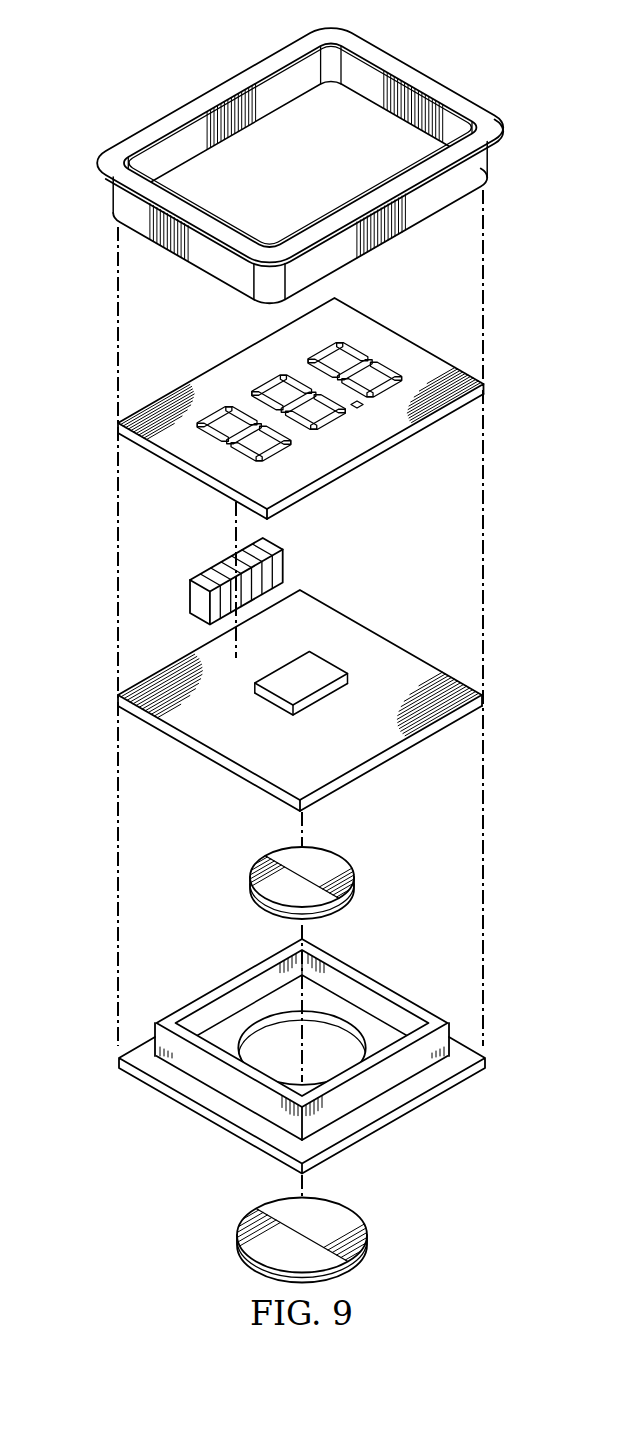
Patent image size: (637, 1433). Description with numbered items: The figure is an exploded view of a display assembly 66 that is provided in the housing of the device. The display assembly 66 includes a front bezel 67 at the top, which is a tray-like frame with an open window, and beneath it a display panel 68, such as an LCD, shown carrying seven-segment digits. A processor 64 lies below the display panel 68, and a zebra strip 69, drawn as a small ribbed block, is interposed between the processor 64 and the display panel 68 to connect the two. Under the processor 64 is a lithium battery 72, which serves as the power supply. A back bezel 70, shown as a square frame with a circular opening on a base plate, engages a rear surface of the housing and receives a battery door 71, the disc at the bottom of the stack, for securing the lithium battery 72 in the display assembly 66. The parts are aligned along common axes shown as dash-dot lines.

The display assembly 66 is at (138, 74).
The front bezel 67 is at (96, 163).
The display panel 68 is at (118, 423).
The zebra strip 69 is at (190, 596).
The processor 64 is at (118, 695).
The lithium battery 72 is at (246, 880).
The back bezel 70 is at (118, 1058).
The battery door 71 is at (236, 1243).